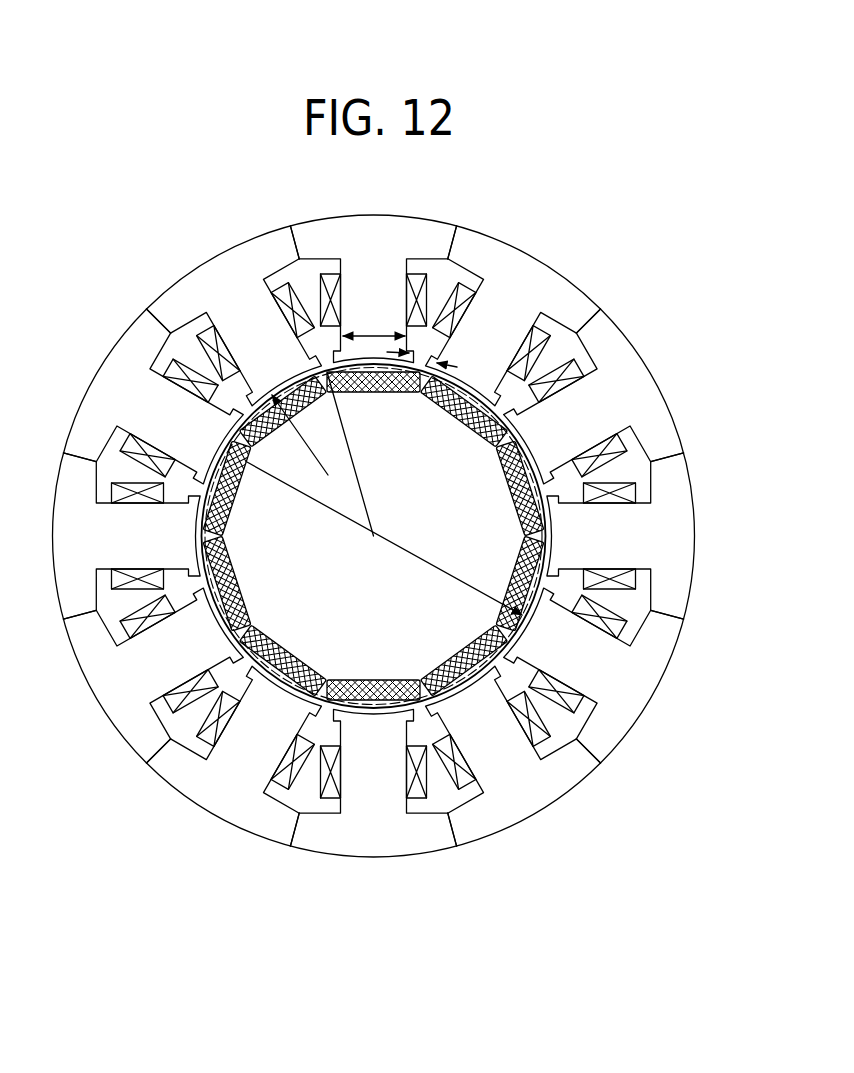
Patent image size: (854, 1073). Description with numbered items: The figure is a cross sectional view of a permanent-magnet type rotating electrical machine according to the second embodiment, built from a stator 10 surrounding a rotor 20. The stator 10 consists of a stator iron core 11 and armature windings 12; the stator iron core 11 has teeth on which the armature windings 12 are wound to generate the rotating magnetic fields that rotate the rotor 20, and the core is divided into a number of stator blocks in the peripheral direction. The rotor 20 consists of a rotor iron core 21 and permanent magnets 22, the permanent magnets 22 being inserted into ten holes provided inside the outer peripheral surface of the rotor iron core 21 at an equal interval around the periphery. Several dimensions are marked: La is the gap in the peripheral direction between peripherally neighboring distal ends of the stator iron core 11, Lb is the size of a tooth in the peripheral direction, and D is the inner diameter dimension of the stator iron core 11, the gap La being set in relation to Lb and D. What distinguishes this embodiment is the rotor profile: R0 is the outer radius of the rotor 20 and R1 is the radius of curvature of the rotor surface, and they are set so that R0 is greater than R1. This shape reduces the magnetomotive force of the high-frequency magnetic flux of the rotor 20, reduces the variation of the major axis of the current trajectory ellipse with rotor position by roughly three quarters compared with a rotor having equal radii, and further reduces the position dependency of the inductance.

The stator 10 is at (213, 277).
The stator iron core 11 is at (597, 407).
The armature windings 12 is at (557, 324).
The rotor 20 is at (468, 538).
The rotor iron core 21 is at (262, 586).
The permanent magnets 22 is at (386, 706).
The outer radius of the rotor R0 is at (360, 454).
The radius of curvature of the rotor surface R1 is at (306, 435).
The inner diameter dimension of the stator iron core D is at (384, 538).
The size of the tooth in the peripheral direction Lb is at (374, 323).
The gap in the peripheral direction between distal ends of the stator iron core La is at (422, 346).